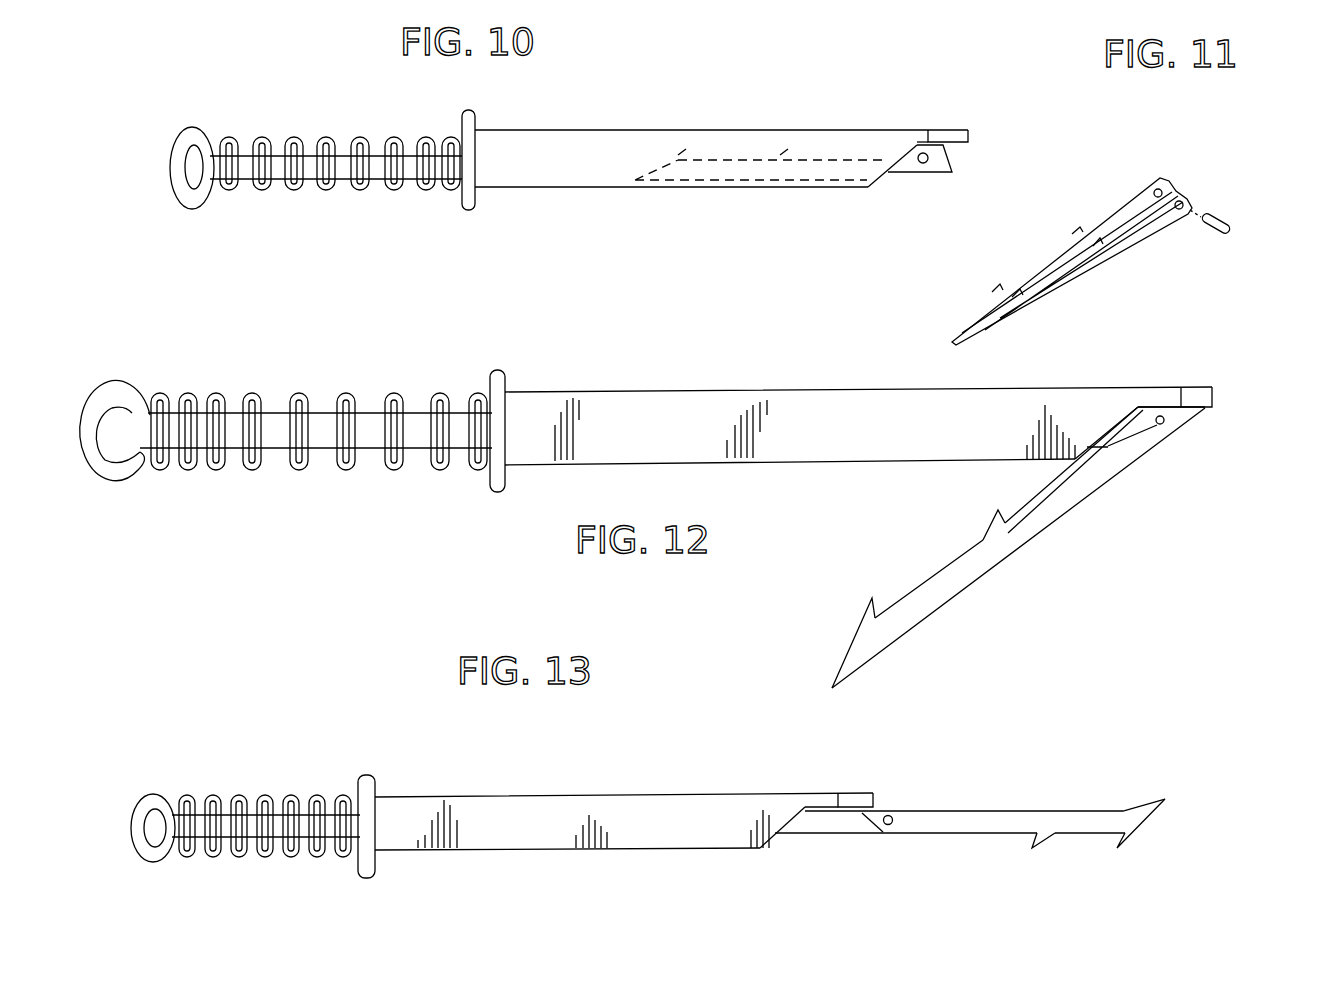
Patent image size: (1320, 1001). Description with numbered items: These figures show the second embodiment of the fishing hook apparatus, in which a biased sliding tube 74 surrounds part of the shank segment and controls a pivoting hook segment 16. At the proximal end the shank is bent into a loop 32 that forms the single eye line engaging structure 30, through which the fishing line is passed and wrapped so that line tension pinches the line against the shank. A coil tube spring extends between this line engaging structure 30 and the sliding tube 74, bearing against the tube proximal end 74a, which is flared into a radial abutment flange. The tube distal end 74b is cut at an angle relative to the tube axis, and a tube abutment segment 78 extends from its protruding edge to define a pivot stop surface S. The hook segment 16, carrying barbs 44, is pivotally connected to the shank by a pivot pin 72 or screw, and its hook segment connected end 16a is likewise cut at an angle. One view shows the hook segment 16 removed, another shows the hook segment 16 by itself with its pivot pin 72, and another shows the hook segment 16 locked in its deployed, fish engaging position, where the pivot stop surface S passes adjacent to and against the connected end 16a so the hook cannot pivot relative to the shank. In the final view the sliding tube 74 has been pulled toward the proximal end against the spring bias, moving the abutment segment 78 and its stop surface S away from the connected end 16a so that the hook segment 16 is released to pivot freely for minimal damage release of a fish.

In FIG. 10, the hook segment 16 is at (817, 167).
In FIG. 11, the hook segment 16 is at (1138, 237).
In FIG. 12, the hook segment 16 is at (935, 575).
In FIG. 13, the hook segment 16 is at (1092, 813).
In FIG. 10, the hook segment connected end 16a is at (940, 170).
In FIG. 11, the hook segment connected end 16a is at (1143, 185).
In FIG. 12, the hook segment connected end 16a is at (1190, 413).
In FIG. 13, the hook segment connected end 16a is at (910, 815).
In FIG. 10, the single eye or loop line engaging structure 30 is at (213, 215).
In FIG. 12, the single eye or loop line engaging structure 30 is at (152, 378).
In FIG. 13, the single eye or loop line engaging structure 30 is at (185, 760).
In FIG. 10, the loop 32 is at (198, 135).
In FIG. 12, the loop 32 is at (112, 393).
In FIG. 13, the loop 32 is at (163, 853).
In FIG. 10, the barbs 44 is at (683, 150).
In FIG. 12, the barbs 44 is at (1000, 515).
In FIG. 13, the barbs 44 is at (1098, 823).
In FIG. 10, the pivot pin 72 is at (928, 150).
In FIG. 11, the pivot pin 72 is at (1213, 215).
In FIG. 12, the pivot pin 72 is at (1160, 427).
In FIG. 13, the pivot pin 72 is at (895, 812).
In FIG. 10, the sliding tube 74 is at (746, 131).
In FIG. 12, the sliding tube 74 is at (850, 407).
In FIG. 13, the sliding tube 74 is at (685, 803).
In FIG. 10, the tube proximal end 74a is at (473, 210).
In FIG. 12, the tube proximal end 74a is at (500, 374).
In FIG. 13, the tube proximal end 74a is at (372, 783).
In FIG. 10, the tube distal end 74b is at (883, 143).
In FIG. 12, the tube distal end 74b is at (1110, 403).
In FIG. 13, the tube distal end 74b is at (792, 810).
In FIG. 10, the tube abutment segment 78 is at (962, 130).
In FIG. 12, the tube abutment segment 78 is at (1212, 392).
In FIG. 13, the tube abutment segment 78 is at (865, 795).
In FIG. 10, the pivot stop surface S is at (958, 155).
In FIG. 12, the pivot stop surface S is at (1180, 405).
In FIG. 13, the pivot stop surface S is at (835, 800).